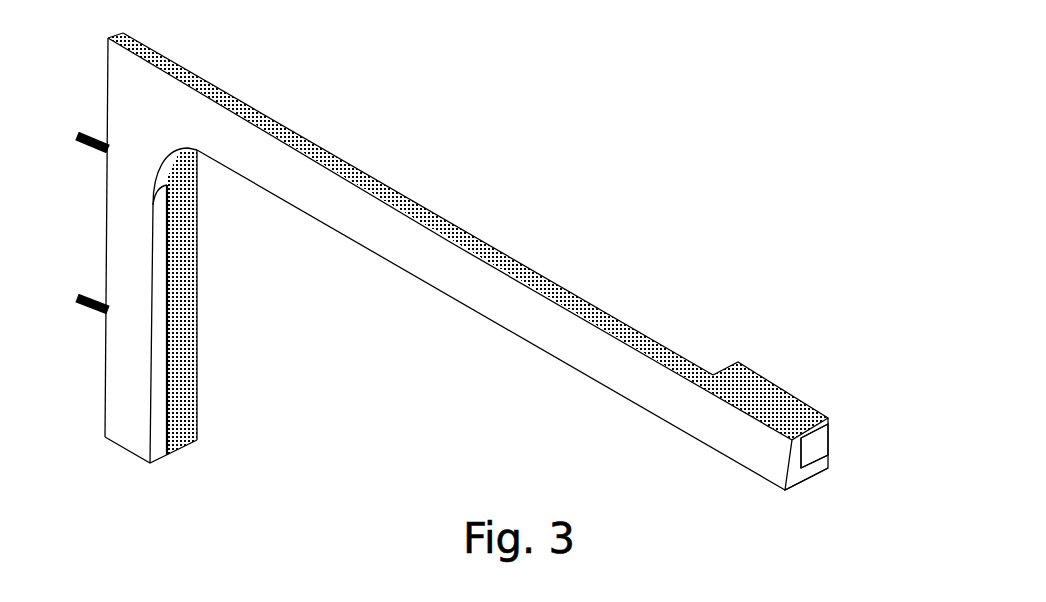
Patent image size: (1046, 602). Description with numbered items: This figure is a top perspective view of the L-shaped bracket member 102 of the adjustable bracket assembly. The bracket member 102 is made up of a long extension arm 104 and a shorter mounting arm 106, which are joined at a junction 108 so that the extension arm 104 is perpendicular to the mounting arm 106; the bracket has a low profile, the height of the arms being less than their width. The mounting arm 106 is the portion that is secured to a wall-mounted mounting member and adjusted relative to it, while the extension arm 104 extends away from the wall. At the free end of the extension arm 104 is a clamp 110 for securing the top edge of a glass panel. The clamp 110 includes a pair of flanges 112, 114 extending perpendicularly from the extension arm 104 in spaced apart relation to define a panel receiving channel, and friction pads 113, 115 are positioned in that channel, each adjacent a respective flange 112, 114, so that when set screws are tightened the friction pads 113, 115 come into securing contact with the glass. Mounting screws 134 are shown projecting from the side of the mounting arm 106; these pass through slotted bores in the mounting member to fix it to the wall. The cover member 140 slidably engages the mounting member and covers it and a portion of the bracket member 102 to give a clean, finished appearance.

The L-shaped bracket member 102 is at (468, 229).
The extension arm 104 is at (600, 345).
The mounting arm 106 is at (192, 444).
The junction 108 is at (163, 107).
The clamp 110 is at (805, 393).
The flange 112 is at (823, 472).
The friction pad 113 is at (826, 450).
The flange 114 is at (828, 420).
The friction pad 115 is at (826, 431).
The mounting screws 134 is at (84, 131).
The cover member 140 is at (200, 308).